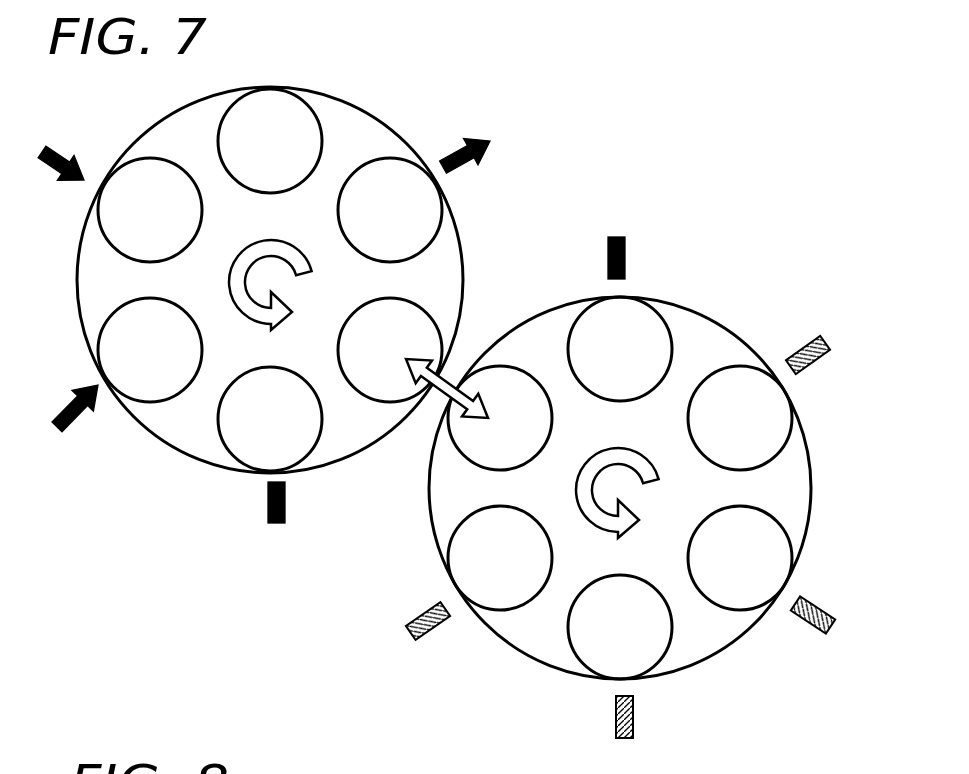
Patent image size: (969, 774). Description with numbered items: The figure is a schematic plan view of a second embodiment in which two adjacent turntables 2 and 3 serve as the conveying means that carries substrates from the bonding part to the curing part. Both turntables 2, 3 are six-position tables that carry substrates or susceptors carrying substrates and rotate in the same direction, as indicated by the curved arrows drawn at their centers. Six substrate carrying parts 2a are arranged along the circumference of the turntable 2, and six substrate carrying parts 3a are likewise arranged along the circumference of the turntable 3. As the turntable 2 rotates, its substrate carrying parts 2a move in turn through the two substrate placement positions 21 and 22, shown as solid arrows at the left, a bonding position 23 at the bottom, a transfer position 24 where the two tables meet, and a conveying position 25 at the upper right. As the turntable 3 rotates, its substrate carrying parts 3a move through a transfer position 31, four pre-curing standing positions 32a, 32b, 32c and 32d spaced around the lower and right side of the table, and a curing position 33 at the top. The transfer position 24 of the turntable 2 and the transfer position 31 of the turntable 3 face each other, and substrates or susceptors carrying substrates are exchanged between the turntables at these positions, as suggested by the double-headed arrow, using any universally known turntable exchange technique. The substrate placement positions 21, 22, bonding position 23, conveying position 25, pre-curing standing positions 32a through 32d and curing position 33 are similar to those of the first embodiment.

The turntable 2 is at (343, 118).
The substrate carrying part 2a is at (258, 122).
The turntable 3 is at (700, 325).
The substrate carrying part 3a is at (629, 318).
The substrate placement position 21 is at (48, 154).
The substrate placement position 22 is at (59, 412).
The bonding position 23 is at (274, 521).
The transfer position 24 is at (390, 350).
The conveying position 25 is at (482, 151).
The transfer position 31 is at (500, 418).
The pre-curing standing position 32a is at (408, 639).
The pre-curing standing position 32b is at (629, 735).
The pre-curing standing position 32c is at (830, 633).
The pre-curing standing position 32d is at (832, 346).
The curing position 33 is at (617, 244).